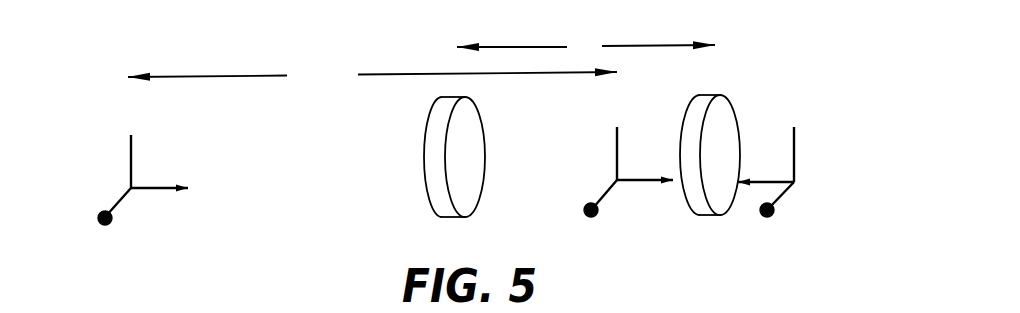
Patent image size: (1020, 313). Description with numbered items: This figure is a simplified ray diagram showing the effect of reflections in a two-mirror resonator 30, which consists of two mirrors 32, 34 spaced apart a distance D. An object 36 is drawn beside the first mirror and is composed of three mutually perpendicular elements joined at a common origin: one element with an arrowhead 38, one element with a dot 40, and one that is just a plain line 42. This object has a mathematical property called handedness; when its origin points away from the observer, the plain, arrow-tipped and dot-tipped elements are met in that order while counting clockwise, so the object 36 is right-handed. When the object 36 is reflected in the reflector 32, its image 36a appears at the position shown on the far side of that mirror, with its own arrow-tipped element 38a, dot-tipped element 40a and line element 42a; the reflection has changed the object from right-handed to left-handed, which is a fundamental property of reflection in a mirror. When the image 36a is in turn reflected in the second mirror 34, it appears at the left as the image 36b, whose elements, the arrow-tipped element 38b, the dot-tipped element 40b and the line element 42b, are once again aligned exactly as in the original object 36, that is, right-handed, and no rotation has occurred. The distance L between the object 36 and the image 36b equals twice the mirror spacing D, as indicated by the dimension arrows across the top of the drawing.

The two-mirror resonator 30 is at (752, 23).
The mirror 32 is at (722, 115).
The mirror 34 is at (433, 193).
The object 36 is at (607, 150).
The image 36a is at (804, 137).
The image 36b is at (136, 165).
The element with an arrowhead 38 is at (636, 179).
The element with an arrowhead 38a is at (772, 180).
The element with an arrowhead 38b is at (160, 188).
The element with a dot 40 is at (600, 195).
The element with a dot 40a is at (773, 202).
The element with a dot 40b is at (117, 200).
The line element 42 is at (616, 142).
The line element 42a is at (797, 153).
The line element 42b is at (132, 152).